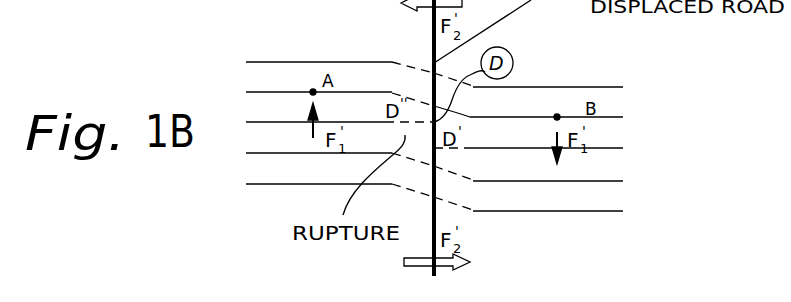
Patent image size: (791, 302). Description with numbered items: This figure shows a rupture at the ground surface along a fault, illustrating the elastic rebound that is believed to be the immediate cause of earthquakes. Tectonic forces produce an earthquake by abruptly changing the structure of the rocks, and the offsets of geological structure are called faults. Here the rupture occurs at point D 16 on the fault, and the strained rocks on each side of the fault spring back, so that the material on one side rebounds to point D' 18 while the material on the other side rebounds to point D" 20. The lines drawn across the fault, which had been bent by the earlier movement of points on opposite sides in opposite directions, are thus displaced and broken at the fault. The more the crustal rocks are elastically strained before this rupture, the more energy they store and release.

The point D 16 is at (434, 175).
The point D' 18 is at (528, 161).
The point D" 20 is at (392, 98).